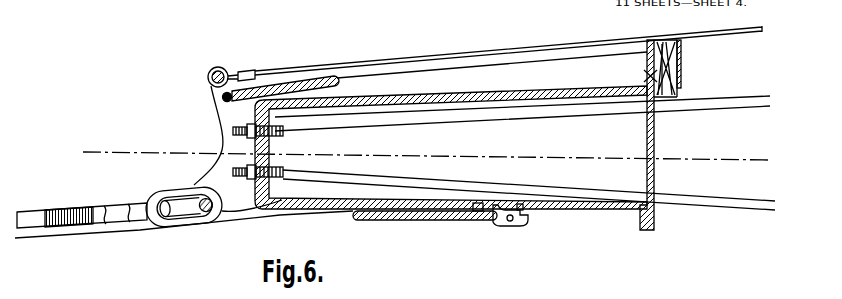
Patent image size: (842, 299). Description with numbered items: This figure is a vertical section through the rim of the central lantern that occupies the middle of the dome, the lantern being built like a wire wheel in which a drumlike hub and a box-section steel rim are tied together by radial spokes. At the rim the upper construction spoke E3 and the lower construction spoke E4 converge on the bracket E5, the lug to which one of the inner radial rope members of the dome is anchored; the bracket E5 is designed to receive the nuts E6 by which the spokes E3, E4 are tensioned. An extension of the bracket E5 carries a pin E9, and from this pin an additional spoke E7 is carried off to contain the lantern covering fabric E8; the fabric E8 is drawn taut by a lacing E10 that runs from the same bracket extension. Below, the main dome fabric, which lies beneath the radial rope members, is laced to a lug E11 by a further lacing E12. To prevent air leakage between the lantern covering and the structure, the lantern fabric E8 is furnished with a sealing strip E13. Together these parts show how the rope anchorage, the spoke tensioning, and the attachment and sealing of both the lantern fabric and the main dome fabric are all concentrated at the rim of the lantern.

The upper construction spoke E3 is at (723, 99).
The lower construction spoke E4 is at (697, 198).
The bracket E5 is at (215, 177).
The nuts E6 is at (238, 168).
The additional spoke E7 is at (470, 51).
The covering fabric E8 is at (498, 55).
The pin E9 is at (217, 67).
The lacing E10 is at (278, 90).
The lug E11 is at (512, 225).
The lacing E12 is at (415, 221).
The sealing strip E13 is at (682, 49).